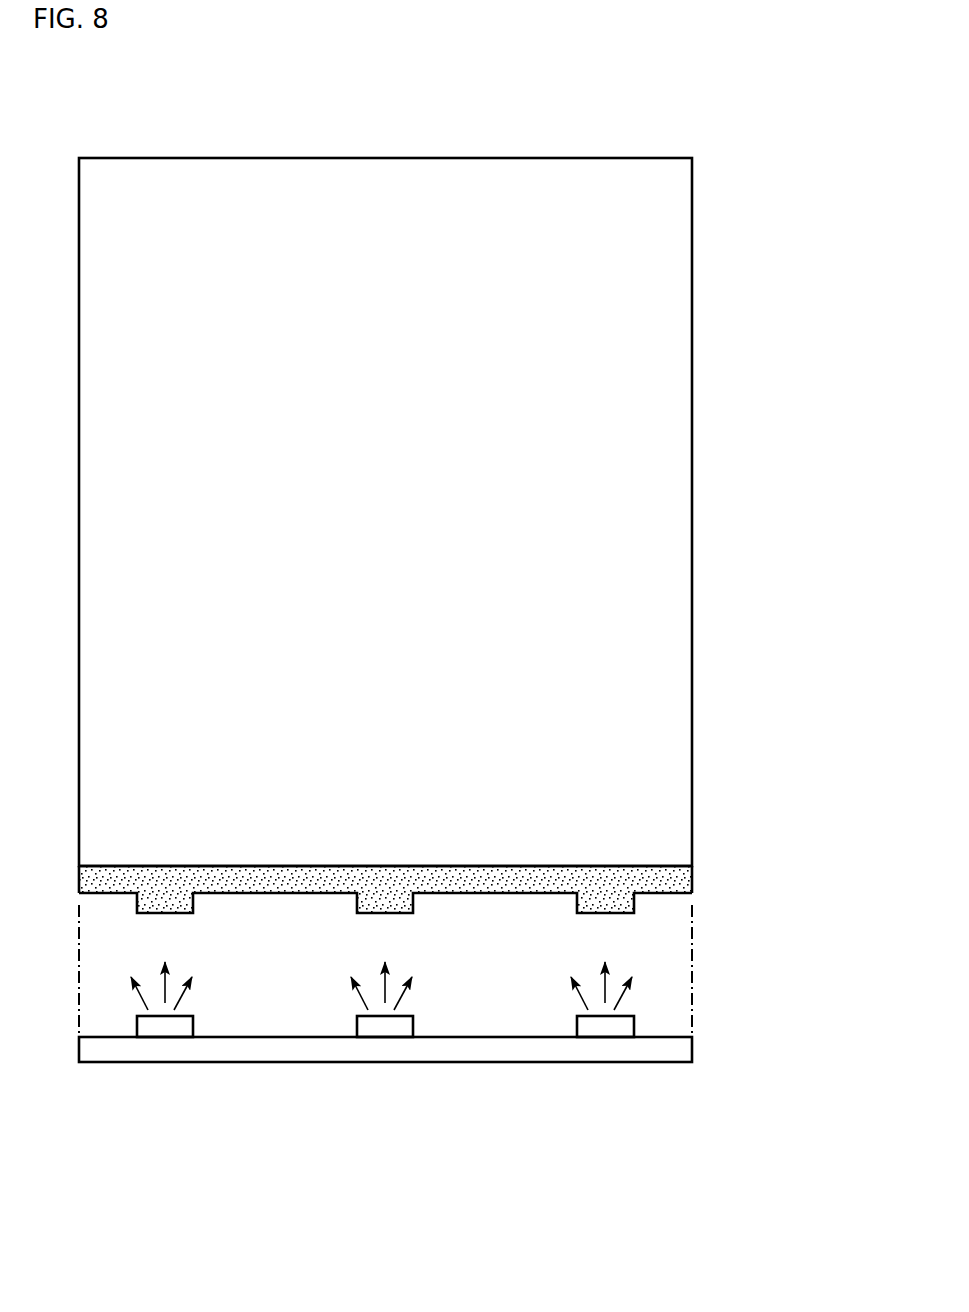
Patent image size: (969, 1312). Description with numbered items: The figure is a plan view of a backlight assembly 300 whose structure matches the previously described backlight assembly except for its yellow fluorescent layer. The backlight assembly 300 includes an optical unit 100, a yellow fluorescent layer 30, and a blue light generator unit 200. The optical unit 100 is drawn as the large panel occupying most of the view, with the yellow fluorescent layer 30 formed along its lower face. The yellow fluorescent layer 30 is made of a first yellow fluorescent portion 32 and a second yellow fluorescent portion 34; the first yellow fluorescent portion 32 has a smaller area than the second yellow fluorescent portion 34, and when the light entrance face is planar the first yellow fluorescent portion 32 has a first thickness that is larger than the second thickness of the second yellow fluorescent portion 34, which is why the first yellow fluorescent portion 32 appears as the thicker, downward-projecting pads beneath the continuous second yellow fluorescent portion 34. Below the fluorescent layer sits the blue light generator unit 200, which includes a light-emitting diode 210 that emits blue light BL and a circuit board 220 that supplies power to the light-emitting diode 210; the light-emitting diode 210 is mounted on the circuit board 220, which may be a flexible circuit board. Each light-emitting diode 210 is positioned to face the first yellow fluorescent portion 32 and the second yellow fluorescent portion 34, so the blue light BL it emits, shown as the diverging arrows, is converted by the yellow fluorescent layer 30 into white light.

The backlight assembly 300 is at (468, 685).
The optical unit 100 is at (722, 572).
The yellow fluorescent layer 30 is at (460, 911).
The second yellow fluorescent portion 34 is at (685, 879).
The first yellow fluorescent portion 32 is at (625, 902).
The blue light generator unit 200 is at (385, 1114).
The circuit board 220 is at (523, 1048).
The light-emitting diode (LED) 210 is at (605, 1025).
The blue light BL is at (398, 1008).